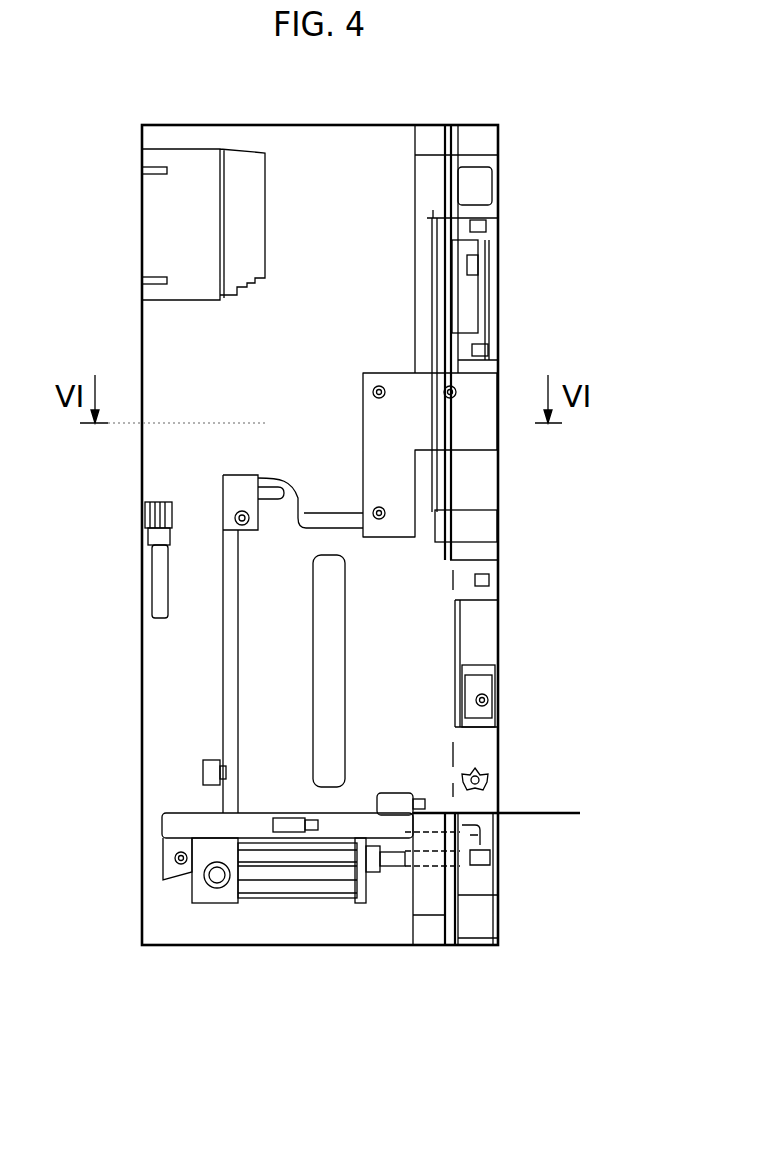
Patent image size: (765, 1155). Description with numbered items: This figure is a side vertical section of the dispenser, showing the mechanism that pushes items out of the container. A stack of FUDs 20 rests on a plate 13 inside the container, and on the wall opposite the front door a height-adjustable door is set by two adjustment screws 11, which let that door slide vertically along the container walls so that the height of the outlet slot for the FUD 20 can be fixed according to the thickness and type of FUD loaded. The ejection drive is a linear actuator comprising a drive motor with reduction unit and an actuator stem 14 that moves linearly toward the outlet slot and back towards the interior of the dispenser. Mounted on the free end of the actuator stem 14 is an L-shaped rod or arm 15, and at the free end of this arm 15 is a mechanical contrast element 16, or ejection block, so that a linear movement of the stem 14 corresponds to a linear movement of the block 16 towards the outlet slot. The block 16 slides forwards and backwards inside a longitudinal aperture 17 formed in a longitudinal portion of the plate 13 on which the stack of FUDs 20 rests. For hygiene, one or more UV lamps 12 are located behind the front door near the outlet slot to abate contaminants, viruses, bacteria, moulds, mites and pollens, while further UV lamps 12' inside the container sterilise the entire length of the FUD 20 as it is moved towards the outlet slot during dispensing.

The adjustment screws 11 is at (493, 778).
The UV lamps 12 is at (523, 694).
The UV lamps 12' is at (405, 779).
The plate 13 is at (178, 812).
The actuator stem 14 is at (425, 858).
The L-shaped rod or arm 15 is at (338, 830).
The mechanical contrast element 16 is at (285, 815).
The longitudinal aperture 17 is at (258, 815).
The FUD 20 is at (556, 812).